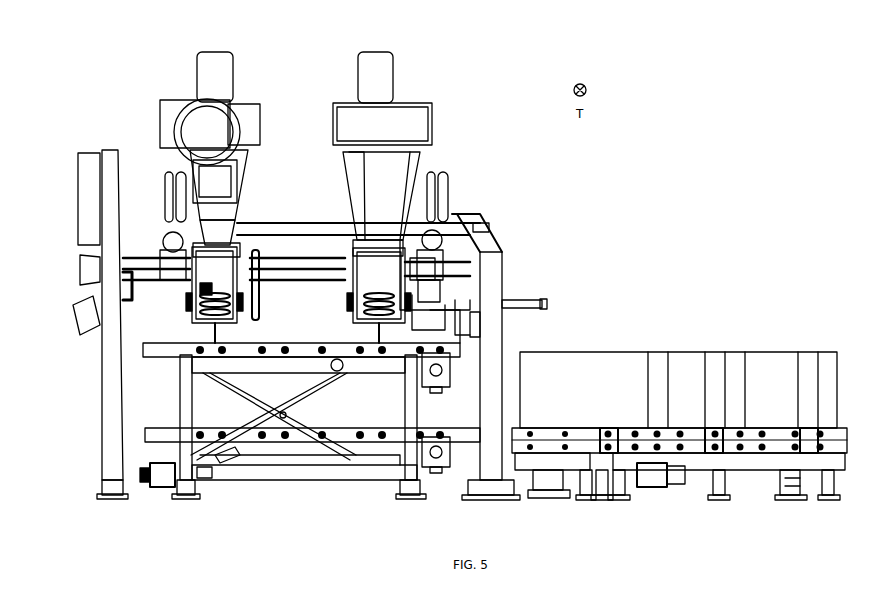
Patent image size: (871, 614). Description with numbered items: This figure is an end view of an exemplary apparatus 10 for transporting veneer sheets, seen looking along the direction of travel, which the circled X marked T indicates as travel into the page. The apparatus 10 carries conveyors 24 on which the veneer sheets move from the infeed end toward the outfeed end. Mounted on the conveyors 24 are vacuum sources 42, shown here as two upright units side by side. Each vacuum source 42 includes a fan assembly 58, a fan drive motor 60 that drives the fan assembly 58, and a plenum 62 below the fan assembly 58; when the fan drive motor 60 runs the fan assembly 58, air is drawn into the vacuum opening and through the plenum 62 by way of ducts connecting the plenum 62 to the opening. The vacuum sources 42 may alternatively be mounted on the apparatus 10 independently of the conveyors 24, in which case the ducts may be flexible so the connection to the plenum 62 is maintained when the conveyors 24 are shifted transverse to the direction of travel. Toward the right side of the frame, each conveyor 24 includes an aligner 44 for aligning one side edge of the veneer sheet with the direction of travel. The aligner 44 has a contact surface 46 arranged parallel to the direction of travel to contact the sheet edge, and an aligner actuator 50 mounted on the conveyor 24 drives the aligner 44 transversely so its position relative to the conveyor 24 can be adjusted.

The apparatus 10 is at (506, 72).
The vacuum source 42 is at (322, 70).
The conveyor 24 is at (322, 186).
The fan drive motor 60 is at (386, 88).
The fan assembly 58 is at (427, 122).
The plenum 62 is at (385, 180).
The aligner actuator 50 is at (530, 300).
The aligner 44 is at (484, 320).
The contact surface 46 is at (460, 347).